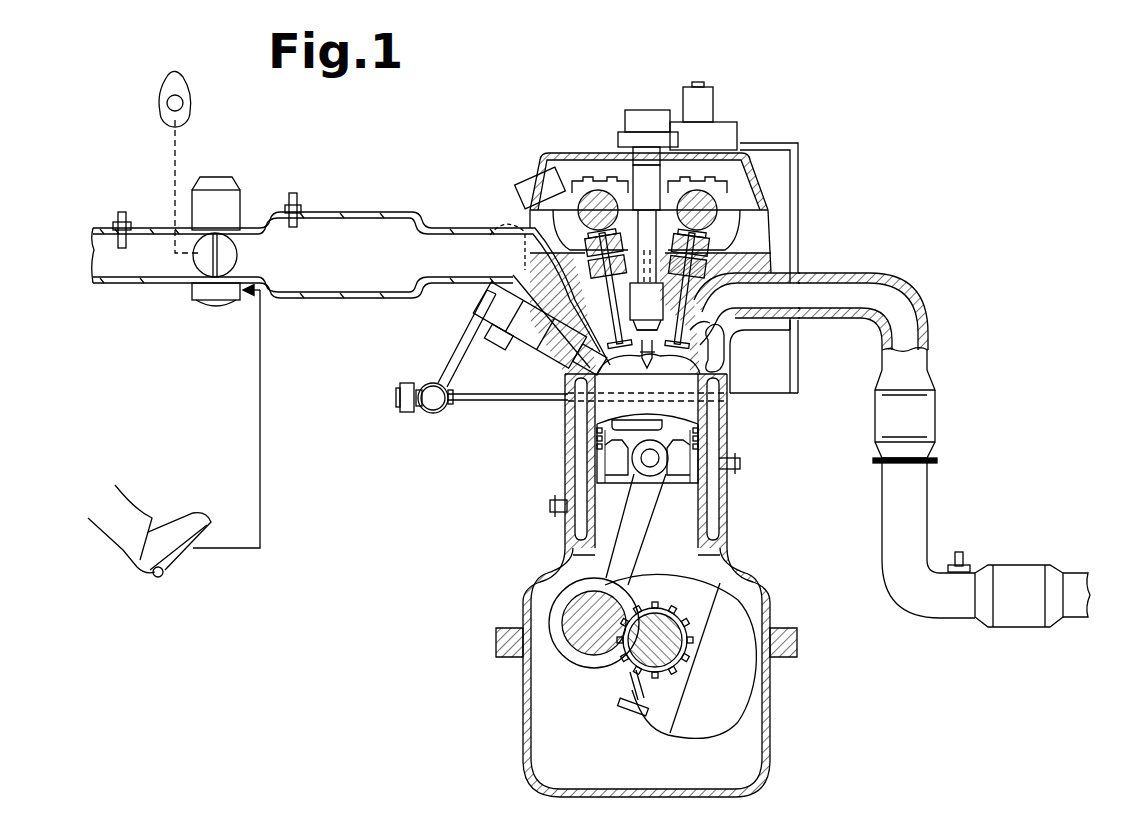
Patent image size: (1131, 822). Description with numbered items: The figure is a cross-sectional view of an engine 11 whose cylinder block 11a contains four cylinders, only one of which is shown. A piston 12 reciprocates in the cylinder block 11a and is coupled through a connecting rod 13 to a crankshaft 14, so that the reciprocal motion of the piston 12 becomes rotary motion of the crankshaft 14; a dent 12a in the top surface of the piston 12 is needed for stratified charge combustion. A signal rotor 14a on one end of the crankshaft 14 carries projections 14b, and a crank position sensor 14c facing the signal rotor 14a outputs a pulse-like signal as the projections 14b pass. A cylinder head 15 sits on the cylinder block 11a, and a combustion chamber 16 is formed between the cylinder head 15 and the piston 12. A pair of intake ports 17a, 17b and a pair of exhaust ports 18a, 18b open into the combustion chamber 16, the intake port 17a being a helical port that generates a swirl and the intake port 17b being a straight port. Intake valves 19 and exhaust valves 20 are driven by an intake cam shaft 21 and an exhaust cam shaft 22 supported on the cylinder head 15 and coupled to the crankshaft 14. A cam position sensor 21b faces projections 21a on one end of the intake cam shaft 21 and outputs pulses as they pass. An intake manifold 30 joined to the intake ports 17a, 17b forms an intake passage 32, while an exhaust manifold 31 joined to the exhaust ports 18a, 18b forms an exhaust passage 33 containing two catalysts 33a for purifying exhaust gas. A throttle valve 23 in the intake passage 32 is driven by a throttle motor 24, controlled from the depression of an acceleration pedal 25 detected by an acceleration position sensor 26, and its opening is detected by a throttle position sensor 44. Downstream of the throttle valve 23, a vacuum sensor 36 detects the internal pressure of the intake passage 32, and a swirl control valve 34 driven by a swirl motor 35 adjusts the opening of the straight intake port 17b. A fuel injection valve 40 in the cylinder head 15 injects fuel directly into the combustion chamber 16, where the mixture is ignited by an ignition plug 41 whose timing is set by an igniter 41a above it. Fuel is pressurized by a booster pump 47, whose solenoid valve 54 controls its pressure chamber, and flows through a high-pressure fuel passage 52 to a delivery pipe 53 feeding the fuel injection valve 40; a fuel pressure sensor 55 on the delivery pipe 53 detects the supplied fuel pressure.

The engine 11 is at (888, 97).
The cylinder block 11a is at (727, 505).
The piston 12 is at (672, 490).
The dent 12a is at (636, 427).
The connecting rod 13 is at (645, 565).
The crankshaft 14 is at (690, 688).
The signal rotor 14a is at (658, 677).
The projections 14b is at (697, 640).
The crank position sensor 14c is at (612, 712).
The cylinder head 15 is at (745, 340).
The combustion chamber 16 is at (575, 414).
The intake port 17a is at (405, 359).
The intake port 17b is at (470, 322).
The exhaust port 18a is at (829, 331).
The exhaust port 18b is at (793, 335).
The intake valves 19 is at (566, 378).
The exhaust valves 20 is at (720, 400).
The intake cam shaft 21 is at (598, 185).
The projections 21a is at (563, 172).
The cam position sensor 21b is at (527, 167).
The exhaust cam shaft 22 is at (733, 152).
The throttle valve 23 is at (238, 255).
The throttle motor 24 is at (241, 186).
The acceleration pedal 25 is at (178, 562).
The acceleration position sensor 26 is at (215, 306).
The intake manifold 30 is at (402, 212).
The exhaust manifold 31 is at (893, 273).
The intake passage 32 is at (410, 274).
The exhaust passage 33 is at (847, 311).
The catalysts 33a is at (935, 425).
The swirl control valve 34 is at (507, 267).
The swirl motor 35 is at (478, 233).
The vacuum sensor 36 is at (300, 195).
The fuel injection valve 40 is at (480, 300).
The ignition plug 41 is at (648, 372).
The igniter 41a is at (630, 112).
The throttle position sensor 44 is at (192, 102).
The booster pump 47 is at (720, 122).
The high-pressure fuel passage 52 is at (478, 405).
The delivery pipe 53 is at (433, 414).
The solenoid valve 54 is at (680, 98).
The fuel pressure sensor 55 is at (396, 412).